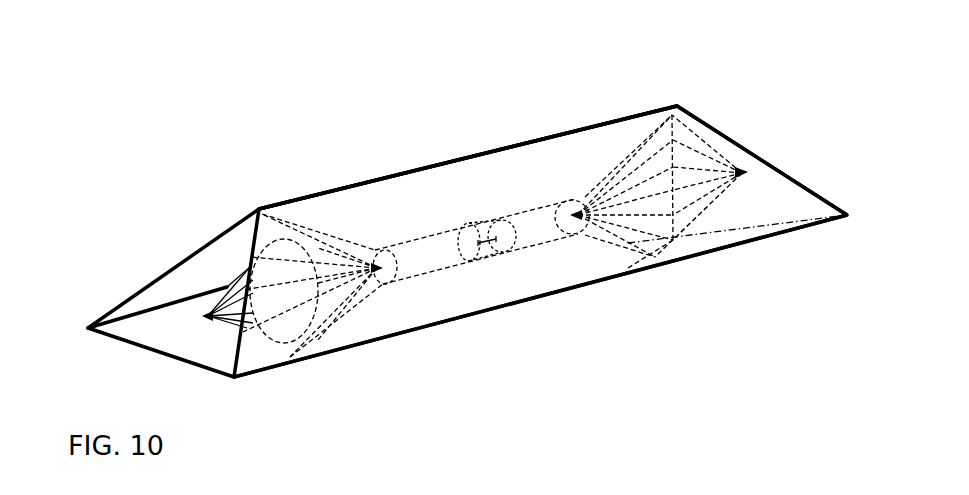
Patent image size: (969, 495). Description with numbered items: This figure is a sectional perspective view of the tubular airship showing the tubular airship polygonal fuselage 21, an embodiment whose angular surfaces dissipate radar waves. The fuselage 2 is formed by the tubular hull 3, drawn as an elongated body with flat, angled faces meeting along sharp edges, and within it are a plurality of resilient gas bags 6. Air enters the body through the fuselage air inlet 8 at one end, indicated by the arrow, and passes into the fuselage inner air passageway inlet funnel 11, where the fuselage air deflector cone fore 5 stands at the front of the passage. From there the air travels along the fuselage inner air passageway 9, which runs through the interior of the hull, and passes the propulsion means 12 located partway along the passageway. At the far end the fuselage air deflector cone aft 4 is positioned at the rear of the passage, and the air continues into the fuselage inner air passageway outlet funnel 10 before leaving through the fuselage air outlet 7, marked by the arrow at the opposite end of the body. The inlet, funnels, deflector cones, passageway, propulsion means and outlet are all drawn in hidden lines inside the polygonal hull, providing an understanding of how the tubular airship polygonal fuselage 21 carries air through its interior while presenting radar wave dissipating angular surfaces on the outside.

The tubular airship polygonal fuselage 21 is at (280, 133).
The fuselage 2 is at (380, 158).
The tubular hull 3 is at (450, 157).
The resilient gas bags 6 is at (528, 180).
The fuselage air inlet 8 is at (765, 197).
The fuselage air outlet 7 is at (190, 340).
The fuselage inner air passageway outlet funnel 10 is at (313, 340).
The fuselage air deflector cone aft 4 is at (333, 312).
The propulsion means 12 is at (480, 260).
The fuselage inner air passageway 9 is at (540, 245).
The fuselage air deflector cone fore 5 is at (627, 250).
The fuselage inner air passageway inlet funnel 11 is at (743, 220).